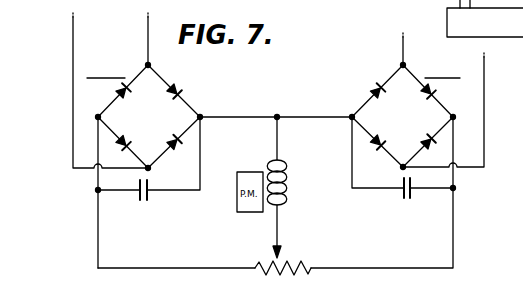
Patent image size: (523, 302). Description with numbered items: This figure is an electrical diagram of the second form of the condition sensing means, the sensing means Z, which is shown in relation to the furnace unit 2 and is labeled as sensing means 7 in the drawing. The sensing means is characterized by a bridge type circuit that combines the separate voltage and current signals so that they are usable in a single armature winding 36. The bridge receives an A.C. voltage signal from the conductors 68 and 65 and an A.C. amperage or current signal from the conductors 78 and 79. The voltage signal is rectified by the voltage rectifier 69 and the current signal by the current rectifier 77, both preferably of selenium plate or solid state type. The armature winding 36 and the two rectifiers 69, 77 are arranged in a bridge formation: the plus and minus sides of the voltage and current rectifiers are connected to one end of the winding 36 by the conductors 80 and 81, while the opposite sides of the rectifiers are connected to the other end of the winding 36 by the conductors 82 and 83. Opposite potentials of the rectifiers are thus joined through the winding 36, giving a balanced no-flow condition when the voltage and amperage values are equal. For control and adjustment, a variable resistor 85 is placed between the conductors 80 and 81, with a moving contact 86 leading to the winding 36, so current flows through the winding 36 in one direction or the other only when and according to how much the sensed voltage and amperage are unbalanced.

The metering circuit 7 is at (382, 65).
The generator unit 2 is at (485, 18).
The armature winding 36 is at (286, 192).
The conductor 65 is at (484, 118).
The conductor 68 is at (404, 50).
The voltage rectifier 69 is at (410, 135).
The current rectifier 77 is at (150, 135).
The conductor 78 is at (73, 52).
The conductor 79 is at (148, 37).
The conductor 80 is at (453, 232).
The conductor 81 is at (98, 224).
The conductor 82 is at (318, 115).
The conductor 83 is at (252, 115).
The variable resistor 85 is at (285, 277).
The moving contact 86 is at (277, 243).